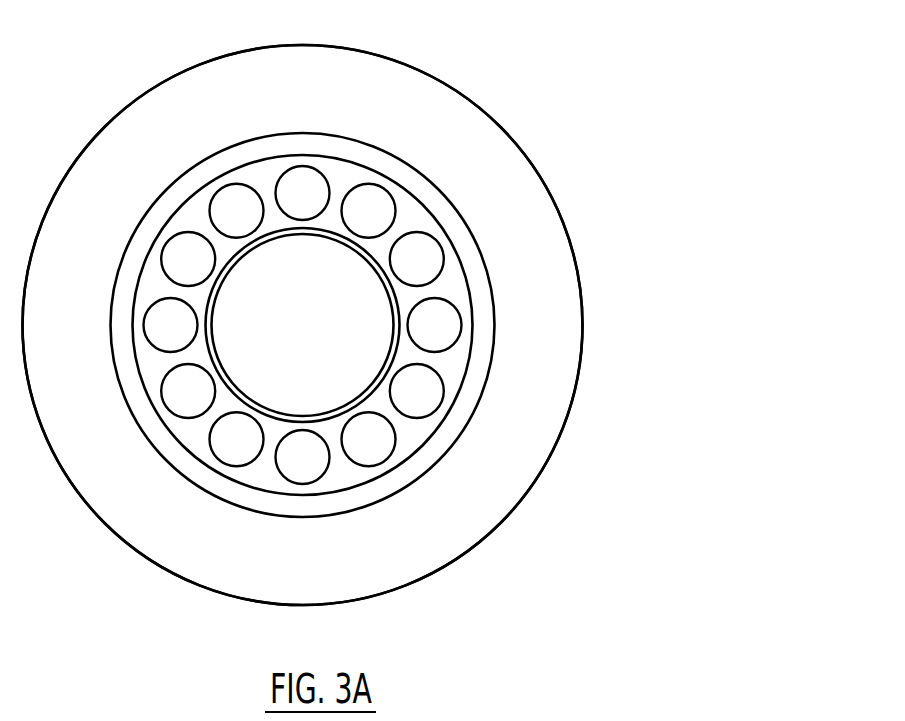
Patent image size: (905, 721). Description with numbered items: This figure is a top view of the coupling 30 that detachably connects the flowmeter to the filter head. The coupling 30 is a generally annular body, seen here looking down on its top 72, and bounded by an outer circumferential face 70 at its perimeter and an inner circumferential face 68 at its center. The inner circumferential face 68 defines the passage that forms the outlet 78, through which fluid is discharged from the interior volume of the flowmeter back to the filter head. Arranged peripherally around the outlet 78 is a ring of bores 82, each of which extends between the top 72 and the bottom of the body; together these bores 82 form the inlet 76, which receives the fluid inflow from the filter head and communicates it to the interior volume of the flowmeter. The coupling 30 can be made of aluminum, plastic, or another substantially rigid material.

The coupling 30 is at (604, 91).
The outer circumferential face 70 is at (553, 192).
The top 72 is at (495, 443).
The inlet 76 is at (310, 247).
The bore 82 is at (336, 202).
The inner circumferential face 68 is at (232, 373).
The outlet 78 is at (330, 279).